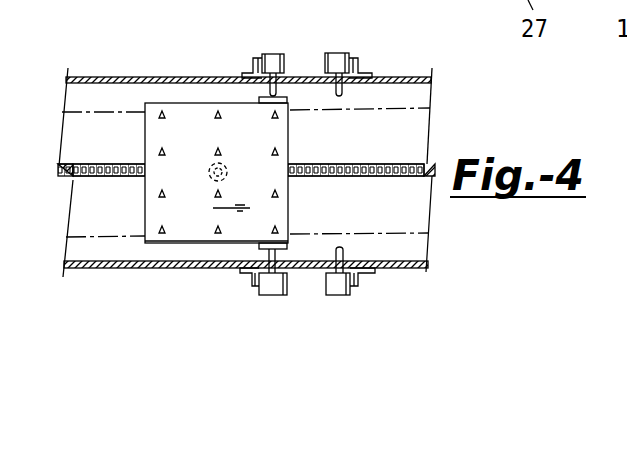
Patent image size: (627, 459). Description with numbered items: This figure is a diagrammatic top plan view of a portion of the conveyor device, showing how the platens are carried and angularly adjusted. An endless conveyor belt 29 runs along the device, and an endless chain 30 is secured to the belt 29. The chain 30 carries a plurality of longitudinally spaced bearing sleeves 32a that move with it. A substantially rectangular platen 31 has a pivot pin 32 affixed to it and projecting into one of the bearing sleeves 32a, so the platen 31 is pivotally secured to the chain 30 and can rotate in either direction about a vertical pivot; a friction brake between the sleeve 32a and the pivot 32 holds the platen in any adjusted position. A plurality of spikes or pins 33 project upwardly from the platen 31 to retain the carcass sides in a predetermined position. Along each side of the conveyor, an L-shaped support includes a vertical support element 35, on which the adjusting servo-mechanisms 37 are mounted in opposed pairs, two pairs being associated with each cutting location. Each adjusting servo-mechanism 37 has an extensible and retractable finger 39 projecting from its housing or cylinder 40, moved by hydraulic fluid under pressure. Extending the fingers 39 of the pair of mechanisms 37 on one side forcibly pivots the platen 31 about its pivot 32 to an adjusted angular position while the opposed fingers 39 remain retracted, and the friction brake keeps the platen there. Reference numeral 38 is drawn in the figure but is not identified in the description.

The endless conveyor belt 29 is at (79, 111).
The endless chain 30 is at (398, 162).
The platen 31 is at (194, 98).
The pivot pin 32 is at (215, 181).
The bearing sleeve 32a is at (208, 170).
The spikes or pins 33 is at (220, 191).
The vertical support element 35 is at (398, 268).
The adjusting servo-mechanism 37 is at (338, 46).
The bracket clips 38 is at (250, 66).
The extensible and retractable finger 39 is at (342, 92).
The housing or cylinder 40 is at (278, 53).